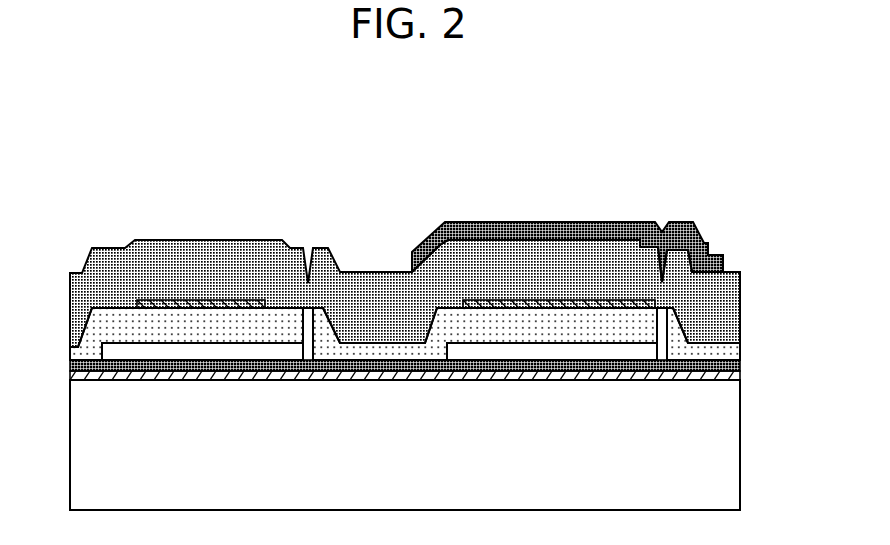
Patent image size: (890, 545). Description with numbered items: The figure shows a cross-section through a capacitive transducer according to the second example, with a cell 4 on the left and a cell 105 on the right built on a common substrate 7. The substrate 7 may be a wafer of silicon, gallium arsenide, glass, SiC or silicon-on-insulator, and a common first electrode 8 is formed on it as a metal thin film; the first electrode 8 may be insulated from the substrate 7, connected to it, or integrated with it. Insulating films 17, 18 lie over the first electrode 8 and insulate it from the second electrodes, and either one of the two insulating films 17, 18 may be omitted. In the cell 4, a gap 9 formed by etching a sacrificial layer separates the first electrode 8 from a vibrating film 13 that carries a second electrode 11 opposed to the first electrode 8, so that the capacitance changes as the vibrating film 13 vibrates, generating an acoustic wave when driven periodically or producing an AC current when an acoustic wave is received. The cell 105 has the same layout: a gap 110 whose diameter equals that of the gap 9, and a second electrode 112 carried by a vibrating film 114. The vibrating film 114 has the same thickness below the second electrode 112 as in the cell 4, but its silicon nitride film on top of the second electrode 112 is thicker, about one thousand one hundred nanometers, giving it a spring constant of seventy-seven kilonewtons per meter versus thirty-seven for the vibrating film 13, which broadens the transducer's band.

The cell 4 is at (392, 202).
The cell 105 is at (750, 202).
The second electrode 11 is at (243, 298).
The second electrode 112 is at (465, 300).
The vibrating film 13 is at (62, 242).
The vibrating film 114 is at (742, 222).
The insulating film 18 is at (740, 350).
The insulating film 17 is at (740, 371).
The substrate 7 is at (740, 485).
The gap 9 is at (213, 352).
The first electrode 8 is at (377, 380).
The gap 110 is at (542, 355).